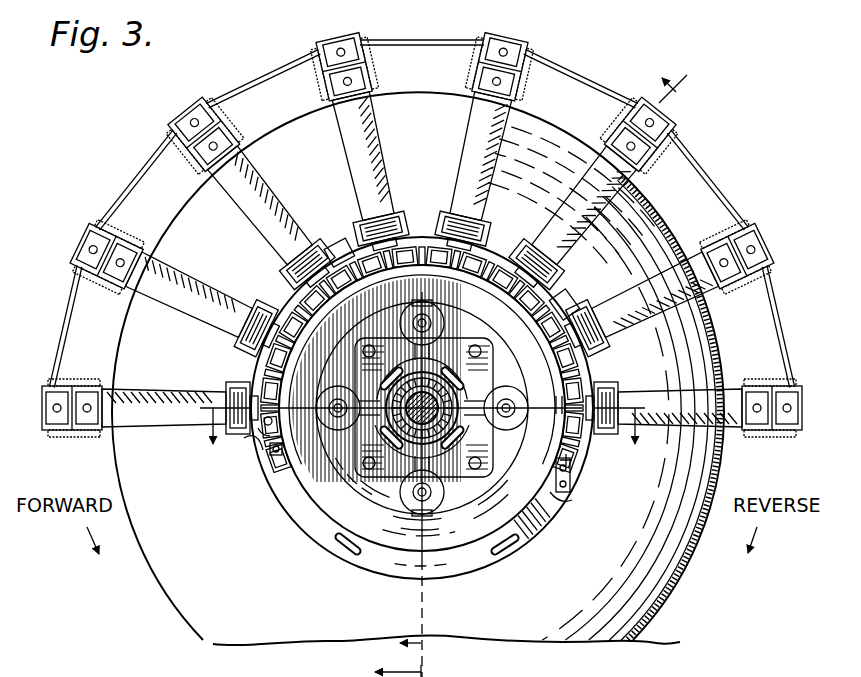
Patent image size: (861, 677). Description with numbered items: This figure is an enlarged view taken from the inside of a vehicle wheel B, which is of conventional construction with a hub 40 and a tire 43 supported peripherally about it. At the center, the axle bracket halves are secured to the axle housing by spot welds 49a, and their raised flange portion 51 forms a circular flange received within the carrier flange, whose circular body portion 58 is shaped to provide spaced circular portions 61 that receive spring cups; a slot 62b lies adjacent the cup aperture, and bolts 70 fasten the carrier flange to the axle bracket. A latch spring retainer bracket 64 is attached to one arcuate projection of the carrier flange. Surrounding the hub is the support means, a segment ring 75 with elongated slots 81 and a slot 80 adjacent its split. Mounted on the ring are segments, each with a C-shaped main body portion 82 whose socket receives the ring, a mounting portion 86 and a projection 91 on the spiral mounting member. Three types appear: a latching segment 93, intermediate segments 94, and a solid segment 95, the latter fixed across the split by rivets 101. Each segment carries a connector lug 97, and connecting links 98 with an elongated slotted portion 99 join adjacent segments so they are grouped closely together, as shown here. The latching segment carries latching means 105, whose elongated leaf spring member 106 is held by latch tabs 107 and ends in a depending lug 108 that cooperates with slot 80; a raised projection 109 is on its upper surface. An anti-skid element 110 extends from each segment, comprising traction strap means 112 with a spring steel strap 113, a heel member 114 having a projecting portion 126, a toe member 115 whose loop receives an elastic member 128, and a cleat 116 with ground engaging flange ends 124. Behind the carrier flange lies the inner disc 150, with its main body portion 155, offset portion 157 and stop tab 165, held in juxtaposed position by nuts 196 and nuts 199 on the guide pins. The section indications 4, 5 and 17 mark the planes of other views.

The heel member 114 is at (233, 128).
The vehicle wheel B is at (150, 590).
The tire 43 is at (683, 578).
The traction strap means 112 is at (385, 153).
The strap 113 is at (256, 190).
The projecting portion 126 is at (136, 263).
The anti-skid element 110 is at (620, 90).
The toe member 115 is at (185, 108).
The cleat 116 is at (133, 227).
The ground engaging flange ends 124 is at (226, 98).
The elastic member 128 is at (72, 312).
The section line 4- 4 is at (530, 357).
The section line 17 is at (376, 669).
The section line 5- 5 is at (421, 444).
The latching segment 93 is at (612, 378).
The connector lug 97 is at (598, 330).
The C-shaped main body portion 82 is at (510, 250).
The connecting links 98 is at (441, 222).
The intermediate segments 94 is at (334, 244).
The projection 91 is at (288, 272).
The elongated slotted portion 99 is at (258, 312).
The solid segment 95 is at (249, 380).
The segment ring 75 is at (302, 540).
The inner disc 150 is at (394, 554).
The mounting portion 86 is at (412, 218).
The raised flange portion 51 is at (331, 309).
The bolts 70 is at (348, 342).
The nuts 199 is at (327, 436).
The hub 40 is at (560, 521).
The latch spring retainer bracket 64 is at (405, 520).
The stop tab 165 is at (496, 497).
The main body portion 155 is at (441, 535).
The offset portion 157 is at (438, 568).
The body portion 58 is at (377, 494).
The elongated slots 81 is at (349, 553).
The spot welds 49a is at (352, 450).
The slot 62b is at (410, 328).
The nuts 196 is at (445, 498).
The spaced circular portions 61 is at (519, 414).
The latch tabs 107 is at (556, 398).
The elongated leaf spring member 106 is at (553, 454).
The latching means 105 is at (585, 468).
The raised projection 109 is at (575, 490).
The depending lug 108 is at (572, 503).
The slot 80 is at (269, 471).
The rivets 101 is at (254, 452).